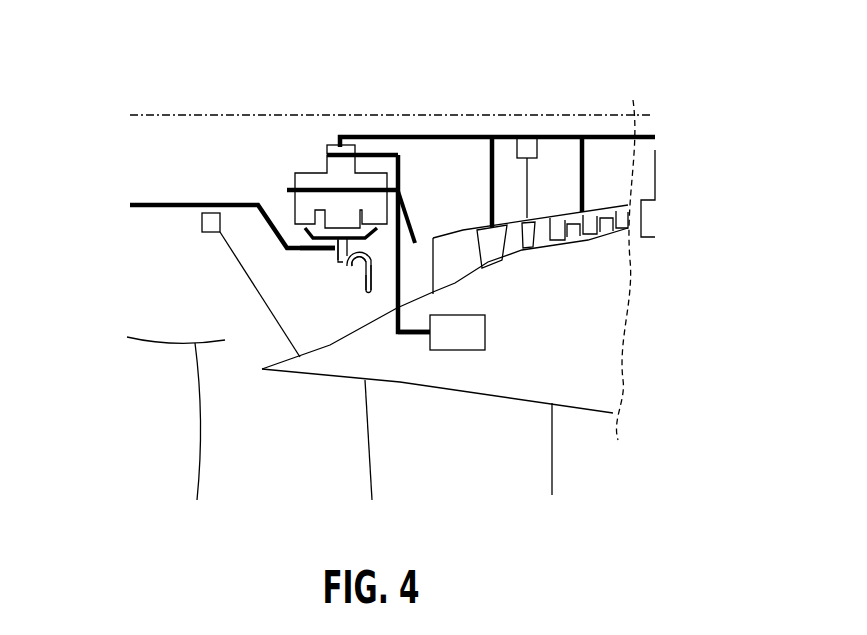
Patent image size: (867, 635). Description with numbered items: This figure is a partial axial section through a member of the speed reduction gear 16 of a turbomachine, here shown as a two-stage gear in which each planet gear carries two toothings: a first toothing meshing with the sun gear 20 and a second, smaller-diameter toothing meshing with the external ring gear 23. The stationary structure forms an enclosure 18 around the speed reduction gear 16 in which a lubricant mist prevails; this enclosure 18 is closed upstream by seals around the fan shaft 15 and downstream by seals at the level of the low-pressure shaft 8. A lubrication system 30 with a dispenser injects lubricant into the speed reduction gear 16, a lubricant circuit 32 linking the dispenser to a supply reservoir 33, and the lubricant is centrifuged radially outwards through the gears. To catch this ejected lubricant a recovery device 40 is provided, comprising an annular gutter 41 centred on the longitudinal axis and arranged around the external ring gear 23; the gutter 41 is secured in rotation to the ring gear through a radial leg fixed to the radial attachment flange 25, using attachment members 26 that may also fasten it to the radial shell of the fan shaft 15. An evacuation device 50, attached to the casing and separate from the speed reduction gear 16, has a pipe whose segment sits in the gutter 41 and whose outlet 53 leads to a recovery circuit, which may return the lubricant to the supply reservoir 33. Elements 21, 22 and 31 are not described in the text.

The low-pressure shaft 8 is at (485, 135).
The fan shaft 15 is at (138, 207).
The speed reduction gear 16 is at (255, 163).
The enclosure 18 is at (287, 138).
The sun gear 20 is at (333, 146).
The valve body 21 is at (365, 180).
The bleed air line wall 22 is at (403, 177).
The external ring gear 23 is at (315, 252).
The radial attachment flange 25 is at (345, 256).
The attachment members 26 is at (340, 253).
The lubrication system 30 is at (494, 305).
The sealing layer 31 is at (357, 154).
The lubricant circuit 32 is at (407, 333).
The supply reservoir 33 is at (482, 310).
The recovery device 40 is at (352, 271).
The gutter 41 is at (343, 275).
The evacuation device 50 is at (373, 302).
The outlet 53 is at (380, 262).